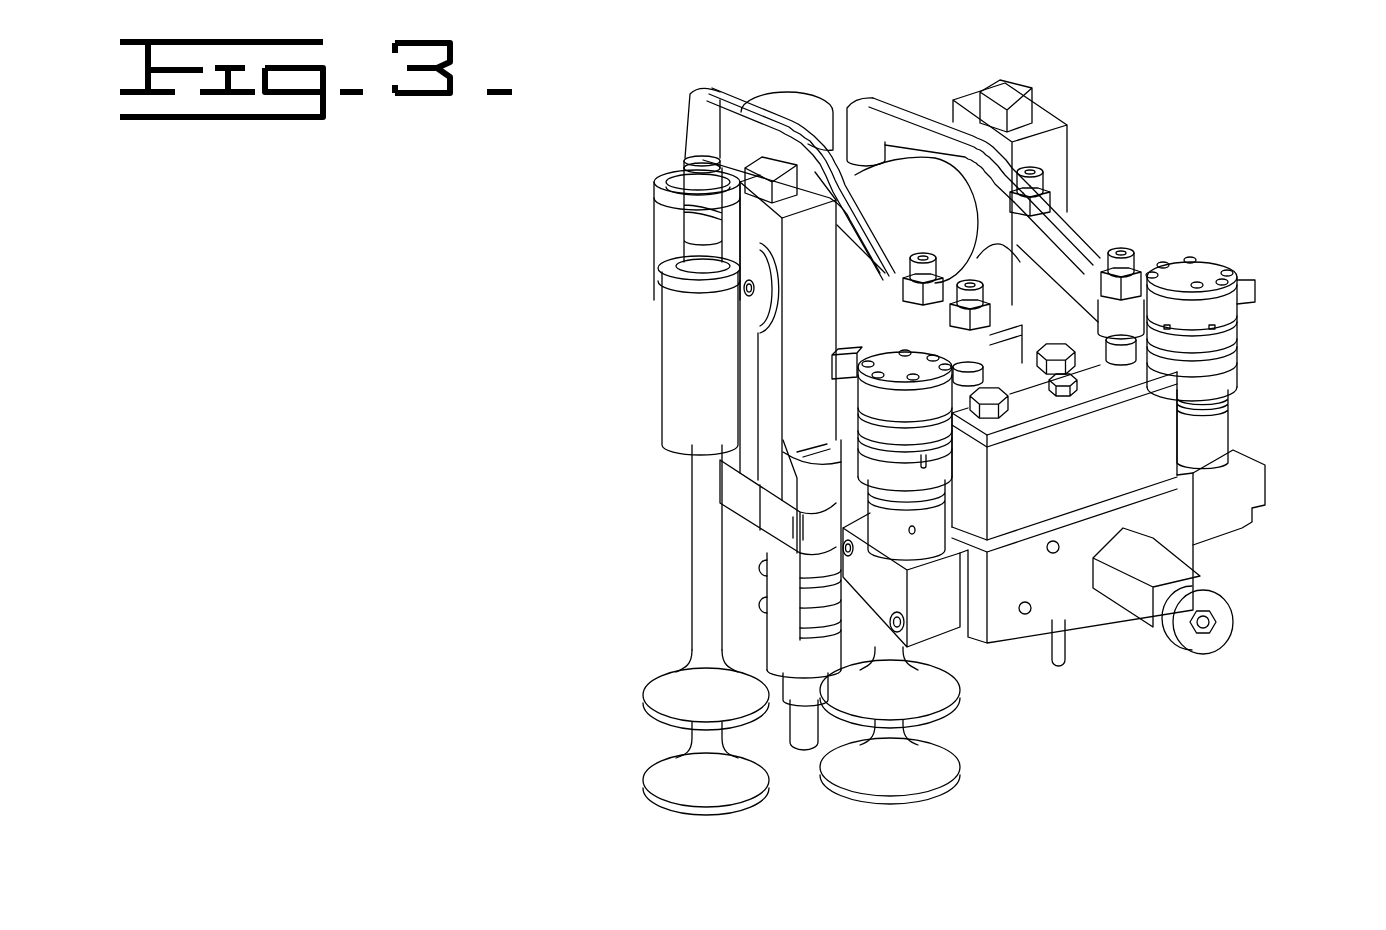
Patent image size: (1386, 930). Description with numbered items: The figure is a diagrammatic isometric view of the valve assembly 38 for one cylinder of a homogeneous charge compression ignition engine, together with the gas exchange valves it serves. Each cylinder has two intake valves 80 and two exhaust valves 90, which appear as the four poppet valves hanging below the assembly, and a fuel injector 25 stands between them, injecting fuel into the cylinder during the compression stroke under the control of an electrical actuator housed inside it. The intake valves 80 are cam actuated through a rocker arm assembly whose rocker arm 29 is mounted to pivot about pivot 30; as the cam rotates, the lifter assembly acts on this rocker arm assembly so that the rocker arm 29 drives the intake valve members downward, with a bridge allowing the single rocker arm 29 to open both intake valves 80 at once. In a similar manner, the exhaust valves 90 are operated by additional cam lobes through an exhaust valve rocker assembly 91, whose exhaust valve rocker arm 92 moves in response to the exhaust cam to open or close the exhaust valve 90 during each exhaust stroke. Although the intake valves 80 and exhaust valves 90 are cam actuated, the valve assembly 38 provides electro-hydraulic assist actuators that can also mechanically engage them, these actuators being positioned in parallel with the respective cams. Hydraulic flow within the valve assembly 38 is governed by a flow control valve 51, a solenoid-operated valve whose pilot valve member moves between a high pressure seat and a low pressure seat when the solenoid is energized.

The fuel injector 25 is at (790, 750).
The rocker arm 29 is at (1047, 223).
The pivot 30 is at (918, 166).
The valve assembly 38 is at (1163, 435).
The flow control valve 51 is at (1278, 311).
The intake valve 80 is at (934, 798).
The exhaust valve 90 is at (687, 813).
The exhaust valve rocker assembly 91 is at (790, 112).
The exhaust valve rocker arm 92 is at (727, 92).